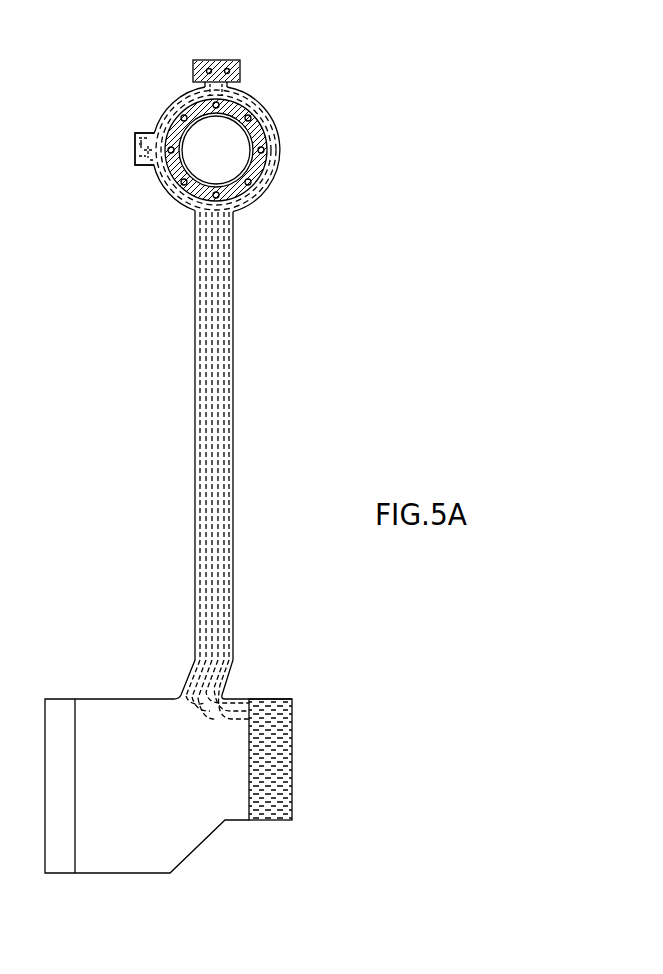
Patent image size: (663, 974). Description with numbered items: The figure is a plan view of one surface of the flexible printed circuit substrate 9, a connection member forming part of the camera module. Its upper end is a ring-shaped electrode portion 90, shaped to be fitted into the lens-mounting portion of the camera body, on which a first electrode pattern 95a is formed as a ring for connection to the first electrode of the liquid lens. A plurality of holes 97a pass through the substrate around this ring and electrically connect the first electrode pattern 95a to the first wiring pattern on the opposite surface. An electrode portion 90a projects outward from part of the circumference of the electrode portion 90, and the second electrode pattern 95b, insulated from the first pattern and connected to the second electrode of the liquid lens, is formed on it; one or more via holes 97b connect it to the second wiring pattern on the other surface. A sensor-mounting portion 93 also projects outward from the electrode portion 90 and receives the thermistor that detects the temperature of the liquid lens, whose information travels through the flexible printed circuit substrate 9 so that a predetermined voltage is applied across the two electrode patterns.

The flexible printed circuit substrate 9 is at (195, 308).
The ring-shaped electrode portion 90 is at (162, 108).
The electrode portion 90a is at (217, 60).
The sensor-mounting portion 93 is at (135, 137).
The first electrode pattern 95a is at (192, 110).
The second electrode pattern 95b is at (240, 67).
The holes 97a is at (264, 152).
The via holes 97b is at (207, 63).